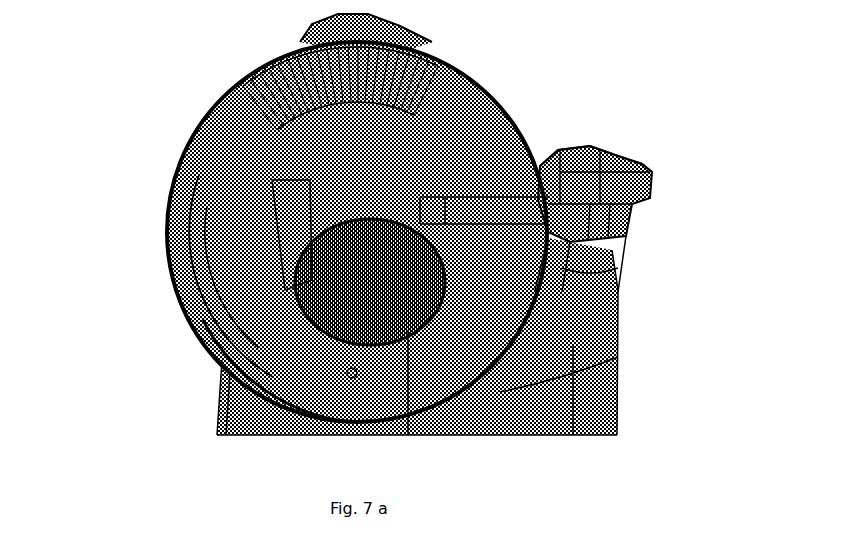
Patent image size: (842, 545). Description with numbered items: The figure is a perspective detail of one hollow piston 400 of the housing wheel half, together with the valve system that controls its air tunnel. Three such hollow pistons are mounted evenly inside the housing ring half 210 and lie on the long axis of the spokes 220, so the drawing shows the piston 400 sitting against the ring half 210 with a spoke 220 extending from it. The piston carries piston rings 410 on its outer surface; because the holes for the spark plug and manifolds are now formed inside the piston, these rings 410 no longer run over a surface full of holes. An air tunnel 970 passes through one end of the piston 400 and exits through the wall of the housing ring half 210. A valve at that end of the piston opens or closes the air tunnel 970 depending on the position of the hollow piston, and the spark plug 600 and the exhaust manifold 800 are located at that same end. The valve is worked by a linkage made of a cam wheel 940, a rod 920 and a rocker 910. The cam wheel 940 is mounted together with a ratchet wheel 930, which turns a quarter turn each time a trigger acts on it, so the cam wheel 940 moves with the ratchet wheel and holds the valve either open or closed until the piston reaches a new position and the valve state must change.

The hollow piston 400 is at (222, 88).
The piston ring 410 is at (187, 125).
The exhaust manifold 800 is at (168, 175).
The spark plug 600 is at (165, 228).
The air tunnel 970 is at (463, 72).
The rocker 910 is at (503, 110).
The rod 920 is at (567, 158).
The ratchet wheel 930 is at (633, 165).
The cam wheel 940 is at (623, 220).
The spoke 220 is at (597, 277).
The housing ring half 210 is at (623, 363).